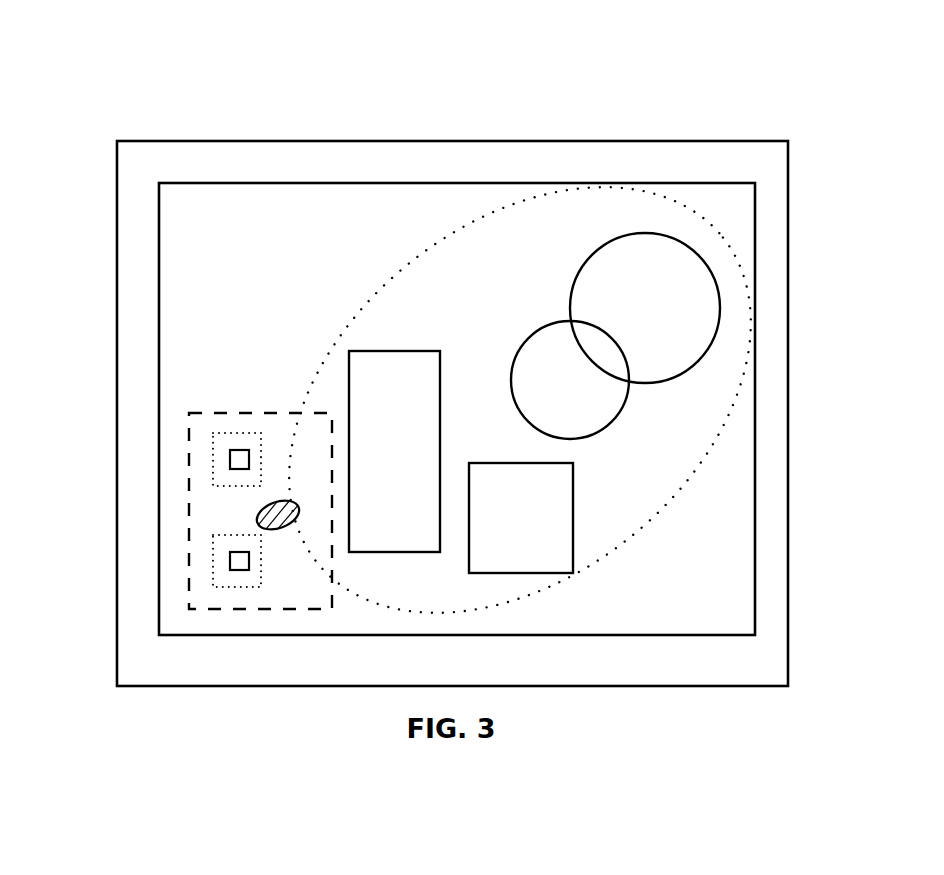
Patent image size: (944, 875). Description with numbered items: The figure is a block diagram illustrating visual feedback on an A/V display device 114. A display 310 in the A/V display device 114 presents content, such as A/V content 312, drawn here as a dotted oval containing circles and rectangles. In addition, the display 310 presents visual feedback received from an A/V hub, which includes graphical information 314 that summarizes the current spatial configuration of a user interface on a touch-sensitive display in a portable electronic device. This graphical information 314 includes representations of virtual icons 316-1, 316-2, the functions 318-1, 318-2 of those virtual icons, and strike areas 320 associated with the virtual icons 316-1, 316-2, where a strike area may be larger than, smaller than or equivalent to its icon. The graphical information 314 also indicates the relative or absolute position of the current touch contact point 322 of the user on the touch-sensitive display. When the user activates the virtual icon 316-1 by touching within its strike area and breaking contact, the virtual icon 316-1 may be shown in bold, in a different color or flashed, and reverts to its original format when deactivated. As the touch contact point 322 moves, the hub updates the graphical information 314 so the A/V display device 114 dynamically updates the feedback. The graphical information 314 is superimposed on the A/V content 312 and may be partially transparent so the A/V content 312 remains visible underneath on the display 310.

The A/V display device 114 is at (737, 140).
The display 310 is at (352, 183).
The A/V content 312 is at (378, 295).
The graphical information 314 is at (229, 412).
The virtual icon 316-1 is at (232, 460).
The virtual icon 316-2 is at (232, 560).
The function 318-1 is at (298, 465).
The function 318-2 is at (298, 564).
The strike areas 320 is at (213, 467).
The touch contact point 322 is at (277, 517).